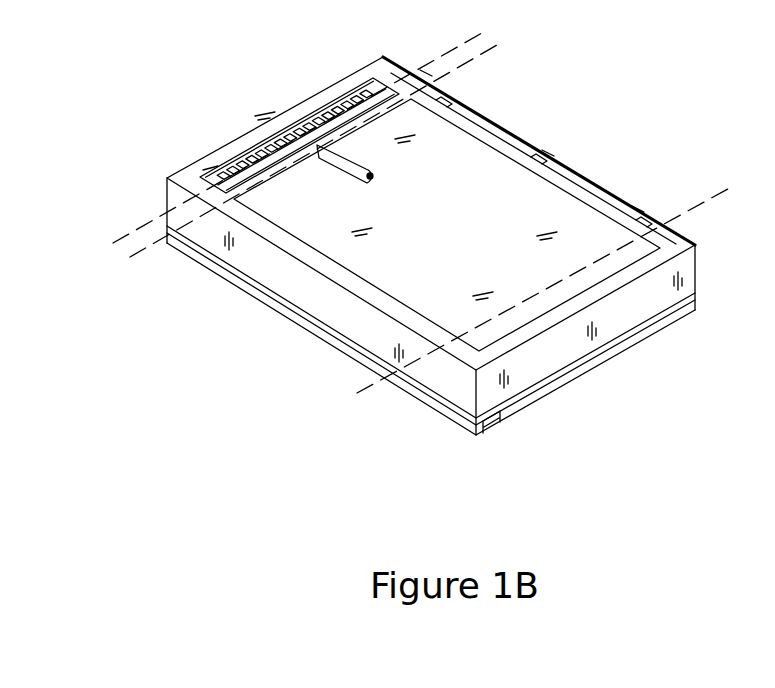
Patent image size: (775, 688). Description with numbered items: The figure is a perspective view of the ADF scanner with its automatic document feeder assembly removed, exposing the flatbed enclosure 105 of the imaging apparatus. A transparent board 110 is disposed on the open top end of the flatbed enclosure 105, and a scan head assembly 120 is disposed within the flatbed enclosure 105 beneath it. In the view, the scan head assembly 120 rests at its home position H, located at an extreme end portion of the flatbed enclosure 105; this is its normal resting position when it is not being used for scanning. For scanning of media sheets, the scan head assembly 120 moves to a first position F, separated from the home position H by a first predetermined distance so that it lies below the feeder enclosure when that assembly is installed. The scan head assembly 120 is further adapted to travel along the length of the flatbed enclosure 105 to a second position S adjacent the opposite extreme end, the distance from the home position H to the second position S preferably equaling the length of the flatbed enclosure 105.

The flatbed enclosure 105 is at (431, 246).
The transparent board 110 is at (508, 131).
The scan head assembly 120 is at (258, 143).
The home position H is at (282, 151).
The first position F is at (307, 166).
The second position S is at (540, 308).